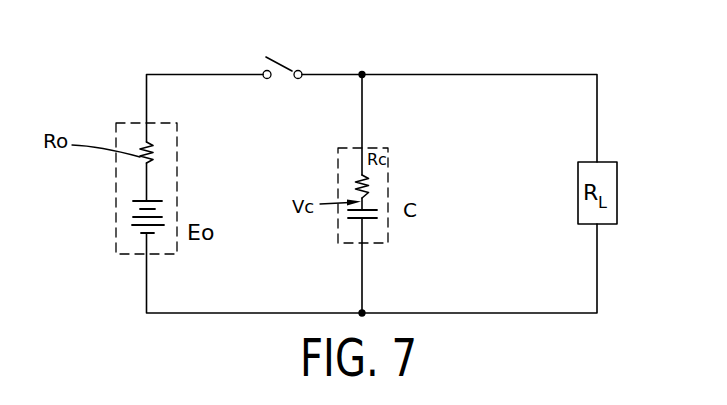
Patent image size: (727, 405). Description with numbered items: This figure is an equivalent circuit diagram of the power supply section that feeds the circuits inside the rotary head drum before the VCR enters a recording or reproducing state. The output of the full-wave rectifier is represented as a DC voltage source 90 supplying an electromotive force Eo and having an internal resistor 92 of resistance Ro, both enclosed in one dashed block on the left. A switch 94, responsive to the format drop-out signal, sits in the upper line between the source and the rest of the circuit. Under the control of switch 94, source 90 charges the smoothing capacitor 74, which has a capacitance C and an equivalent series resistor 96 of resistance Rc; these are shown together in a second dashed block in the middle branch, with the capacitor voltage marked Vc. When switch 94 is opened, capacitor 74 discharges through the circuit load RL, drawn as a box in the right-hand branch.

The switch 94 is at (278, 60).
The internal resistor 92 is at (167, 142).
The DC voltage source 90 is at (177, 187).
The equivalent series resistor 96 is at (377, 181).
The smoothing capacitor 74 is at (387, 233).